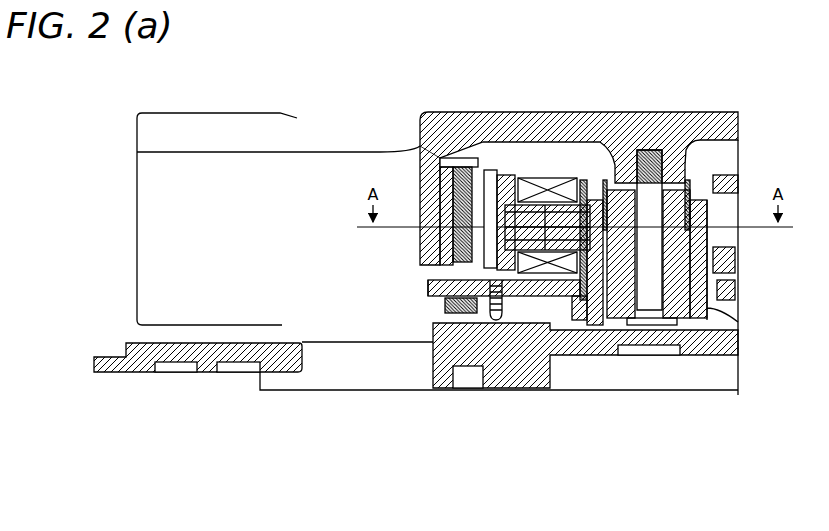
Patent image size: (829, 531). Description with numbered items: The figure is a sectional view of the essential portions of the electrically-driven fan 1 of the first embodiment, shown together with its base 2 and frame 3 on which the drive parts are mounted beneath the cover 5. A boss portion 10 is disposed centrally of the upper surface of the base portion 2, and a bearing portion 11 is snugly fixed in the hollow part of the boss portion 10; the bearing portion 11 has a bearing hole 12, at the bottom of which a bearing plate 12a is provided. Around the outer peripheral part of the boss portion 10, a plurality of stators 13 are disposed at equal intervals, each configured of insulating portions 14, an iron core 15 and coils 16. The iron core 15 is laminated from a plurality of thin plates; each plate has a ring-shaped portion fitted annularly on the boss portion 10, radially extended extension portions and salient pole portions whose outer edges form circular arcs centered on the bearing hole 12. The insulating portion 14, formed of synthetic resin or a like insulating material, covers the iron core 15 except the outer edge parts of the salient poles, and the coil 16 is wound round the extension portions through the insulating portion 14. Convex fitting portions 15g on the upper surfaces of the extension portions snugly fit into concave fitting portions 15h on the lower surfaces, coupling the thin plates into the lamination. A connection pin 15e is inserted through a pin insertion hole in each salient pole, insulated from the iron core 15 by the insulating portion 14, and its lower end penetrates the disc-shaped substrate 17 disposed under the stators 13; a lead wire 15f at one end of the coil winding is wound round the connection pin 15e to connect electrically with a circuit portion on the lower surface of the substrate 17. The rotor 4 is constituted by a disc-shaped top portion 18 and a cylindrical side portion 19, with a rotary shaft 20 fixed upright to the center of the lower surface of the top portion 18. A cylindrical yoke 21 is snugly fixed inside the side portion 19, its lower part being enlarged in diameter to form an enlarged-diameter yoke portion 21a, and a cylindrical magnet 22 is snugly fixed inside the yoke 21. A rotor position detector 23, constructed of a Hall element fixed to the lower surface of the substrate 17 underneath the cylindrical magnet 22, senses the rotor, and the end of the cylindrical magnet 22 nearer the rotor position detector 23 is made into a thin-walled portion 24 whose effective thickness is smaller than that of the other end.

The motor 1 is at (750, 80).
The base portion 2 is at (141, 373).
The frame 3 is at (375, 362).
The rotor 4 is at (443, 112).
The cover 5 is at (248, 112).
The boss portion 10 is at (598, 312).
The bearing portion 11 is at (737, 288).
The bearing hole 12 is at (737, 253).
The bearing plate 12a is at (662, 322).
The stators 13 is at (566, 158).
The insulating portion 14 is at (496, 177).
The iron core 15 is at (485, 172).
The connection pin 15e is at (420, 245).
The lead wire 15f is at (540, 330).
The convex fitting portion 15g is at (545, 176).
The concave fitting portion 15h is at (552, 233).
The coil 16 is at (590, 142).
The disc-shaped substrate 17 is at (431, 300).
The top portion 18 is at (662, 150).
The side portion 19 is at (420, 234).
The rotary shaft 20 is at (687, 135).
The yoke 21 is at (420, 155).
The enlarged-diameter yoke portion 21a is at (453, 263).
The cylindrical magnet 22 is at (420, 143).
The rotor position detector 23 is at (465, 314).
The thin-walled portion 24 is at (428, 284).